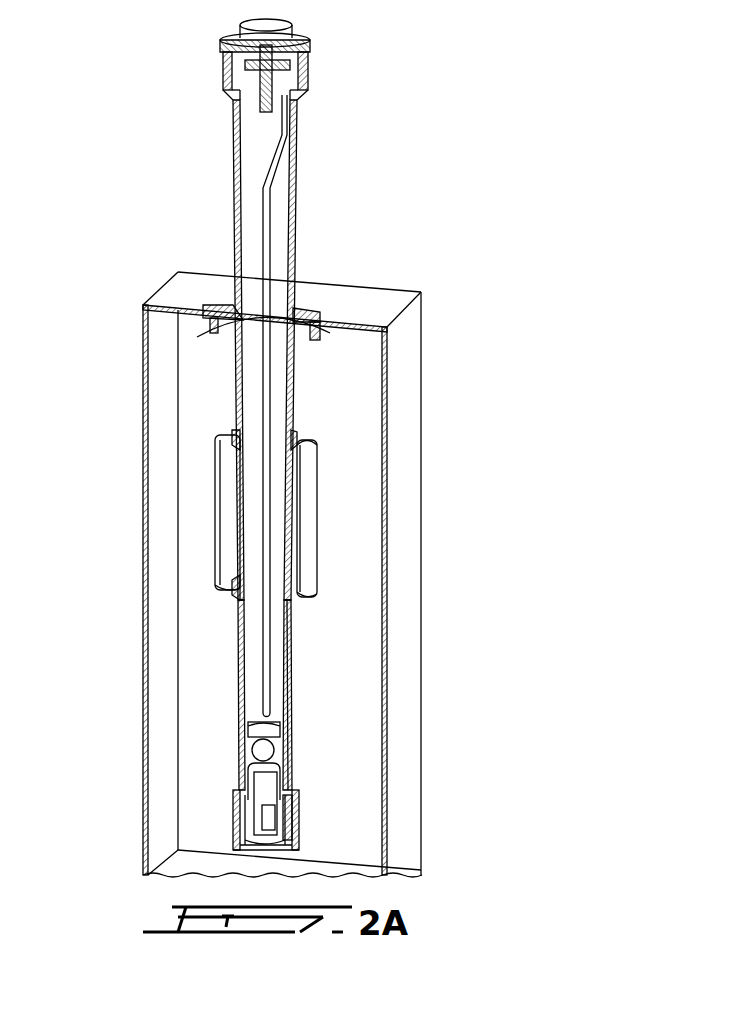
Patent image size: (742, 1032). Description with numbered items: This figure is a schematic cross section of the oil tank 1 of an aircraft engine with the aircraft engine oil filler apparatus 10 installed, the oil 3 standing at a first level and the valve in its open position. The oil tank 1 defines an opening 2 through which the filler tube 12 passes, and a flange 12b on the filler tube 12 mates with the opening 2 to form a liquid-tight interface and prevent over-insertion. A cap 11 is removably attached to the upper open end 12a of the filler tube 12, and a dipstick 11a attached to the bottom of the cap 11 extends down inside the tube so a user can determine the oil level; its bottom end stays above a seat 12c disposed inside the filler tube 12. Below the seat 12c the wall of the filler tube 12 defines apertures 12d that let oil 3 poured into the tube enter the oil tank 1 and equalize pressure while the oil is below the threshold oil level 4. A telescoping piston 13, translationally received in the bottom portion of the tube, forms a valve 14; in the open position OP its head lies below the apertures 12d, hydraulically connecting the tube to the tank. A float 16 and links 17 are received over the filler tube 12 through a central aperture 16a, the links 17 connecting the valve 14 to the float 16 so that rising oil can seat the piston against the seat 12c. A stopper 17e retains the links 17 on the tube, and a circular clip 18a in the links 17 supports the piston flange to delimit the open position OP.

The aircraft engine oil filler apparatus 10 is at (615, 165).
The oil tank 1 is at (432, 610).
The opening 2 is at (210, 325).
The oil 3 is at (368, 864).
The threshold oil level 4 is at (383, 490).
The cap 11 is at (323, 45).
The dipstick 11a is at (270, 205).
The filler tube 12 is at (297, 237).
The upper open end 12a is at (310, 63).
The flange 12b is at (318, 300).
The seat 12c is at (280, 728).
The apertures 12d is at (254, 748).
The telescoping piston 13 is at (240, 795).
The valve 14 is at (224, 770).
The float 16 is at (328, 538).
The central aperture 16a is at (300, 443).
The links 17 is at (240, 648).
The stopper 17e is at (292, 807).
The circular clip 18a is at (148, 875).
The open position OP is at (218, 815).